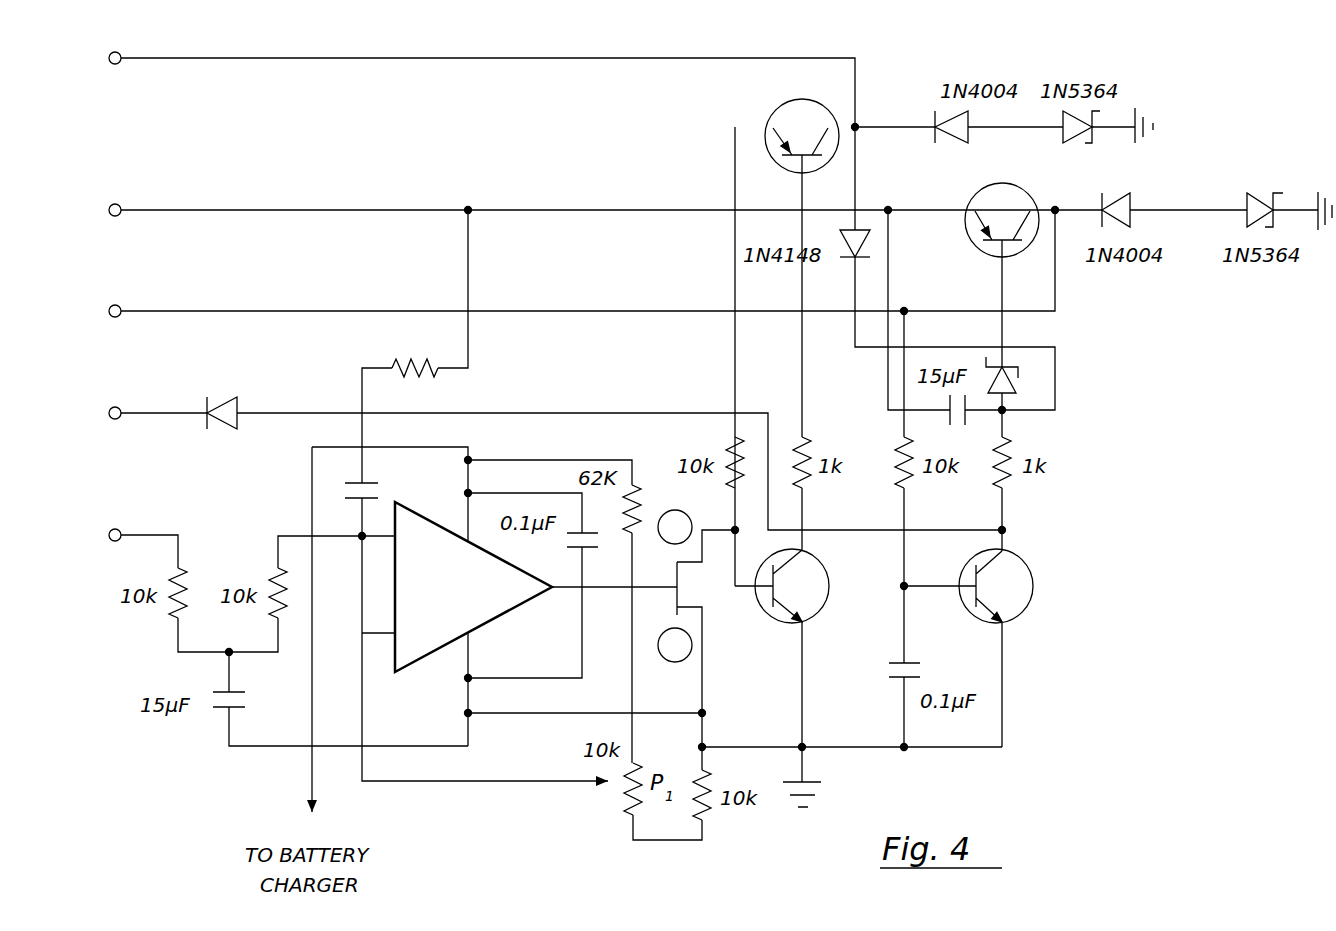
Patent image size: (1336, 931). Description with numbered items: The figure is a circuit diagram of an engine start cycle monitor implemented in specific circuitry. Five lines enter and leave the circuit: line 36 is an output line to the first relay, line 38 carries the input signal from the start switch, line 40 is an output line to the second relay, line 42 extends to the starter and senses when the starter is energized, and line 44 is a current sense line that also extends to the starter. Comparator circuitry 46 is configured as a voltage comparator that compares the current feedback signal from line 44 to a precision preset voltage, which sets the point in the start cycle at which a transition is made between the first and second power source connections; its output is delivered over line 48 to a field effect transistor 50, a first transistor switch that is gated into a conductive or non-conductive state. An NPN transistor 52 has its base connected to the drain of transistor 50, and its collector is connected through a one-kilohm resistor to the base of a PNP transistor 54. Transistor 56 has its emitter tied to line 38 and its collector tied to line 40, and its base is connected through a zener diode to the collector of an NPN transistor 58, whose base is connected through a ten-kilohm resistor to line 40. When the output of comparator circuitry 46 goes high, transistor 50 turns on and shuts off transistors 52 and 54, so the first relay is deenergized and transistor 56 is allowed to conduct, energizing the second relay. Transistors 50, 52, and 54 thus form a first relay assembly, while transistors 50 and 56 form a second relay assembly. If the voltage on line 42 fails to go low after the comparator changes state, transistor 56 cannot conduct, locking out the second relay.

The line 36 is at (145, 62).
The line 38 is at (132, 212).
The line 40 is at (145, 314).
The line 42 is at (132, 416).
The current sense line 44 is at (143, 533).
The comparator circuitry 46 is at (466, 397).
The line 48 is at (570, 590).
The field effect transistor 50 is at (718, 599).
The NPN transistor 52 is at (841, 559).
The PNP transistor 54 is at (752, 107).
The transistor 56 is at (952, 234).
The NPN transistor 58 is at (1049, 561).